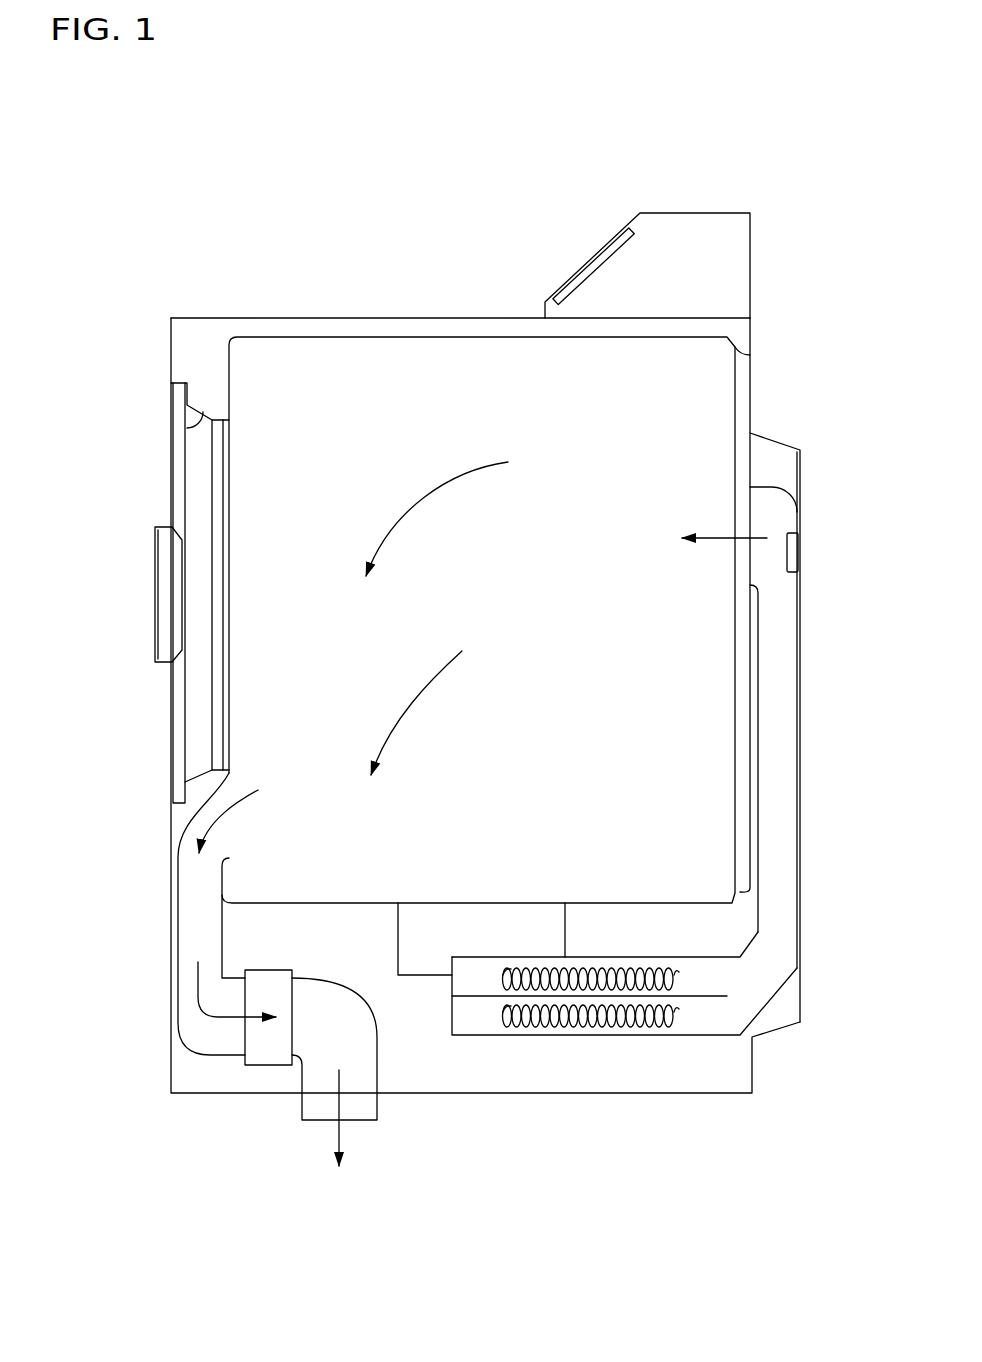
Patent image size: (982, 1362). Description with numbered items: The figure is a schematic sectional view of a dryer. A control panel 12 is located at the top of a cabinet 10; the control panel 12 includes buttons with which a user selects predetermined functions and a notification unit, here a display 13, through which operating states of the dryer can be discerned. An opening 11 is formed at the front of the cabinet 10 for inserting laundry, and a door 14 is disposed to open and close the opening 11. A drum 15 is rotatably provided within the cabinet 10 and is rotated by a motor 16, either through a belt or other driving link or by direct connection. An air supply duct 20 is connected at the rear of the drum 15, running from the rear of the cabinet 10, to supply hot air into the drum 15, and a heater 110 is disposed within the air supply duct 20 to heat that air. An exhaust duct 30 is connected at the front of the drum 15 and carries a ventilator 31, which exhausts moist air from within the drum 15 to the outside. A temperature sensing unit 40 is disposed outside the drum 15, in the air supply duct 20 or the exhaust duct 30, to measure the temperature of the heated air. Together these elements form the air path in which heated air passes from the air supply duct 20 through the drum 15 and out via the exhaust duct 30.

The cabinet 10 is at (295, 305).
The opening 11 is at (187, 427).
The control panel 12 is at (698, 235).
The display 13 is at (590, 263).
The door 14 is at (182, 692).
The drum 15 is at (437, 368).
The motor 16 is at (428, 960).
The air supply duct 20 is at (782, 722).
The exhaust duct 30 is at (193, 903).
The ventilator 31 is at (266, 1053).
The temperature sensing unit 40 is at (787, 555).
The heater 110 is at (602, 1028).